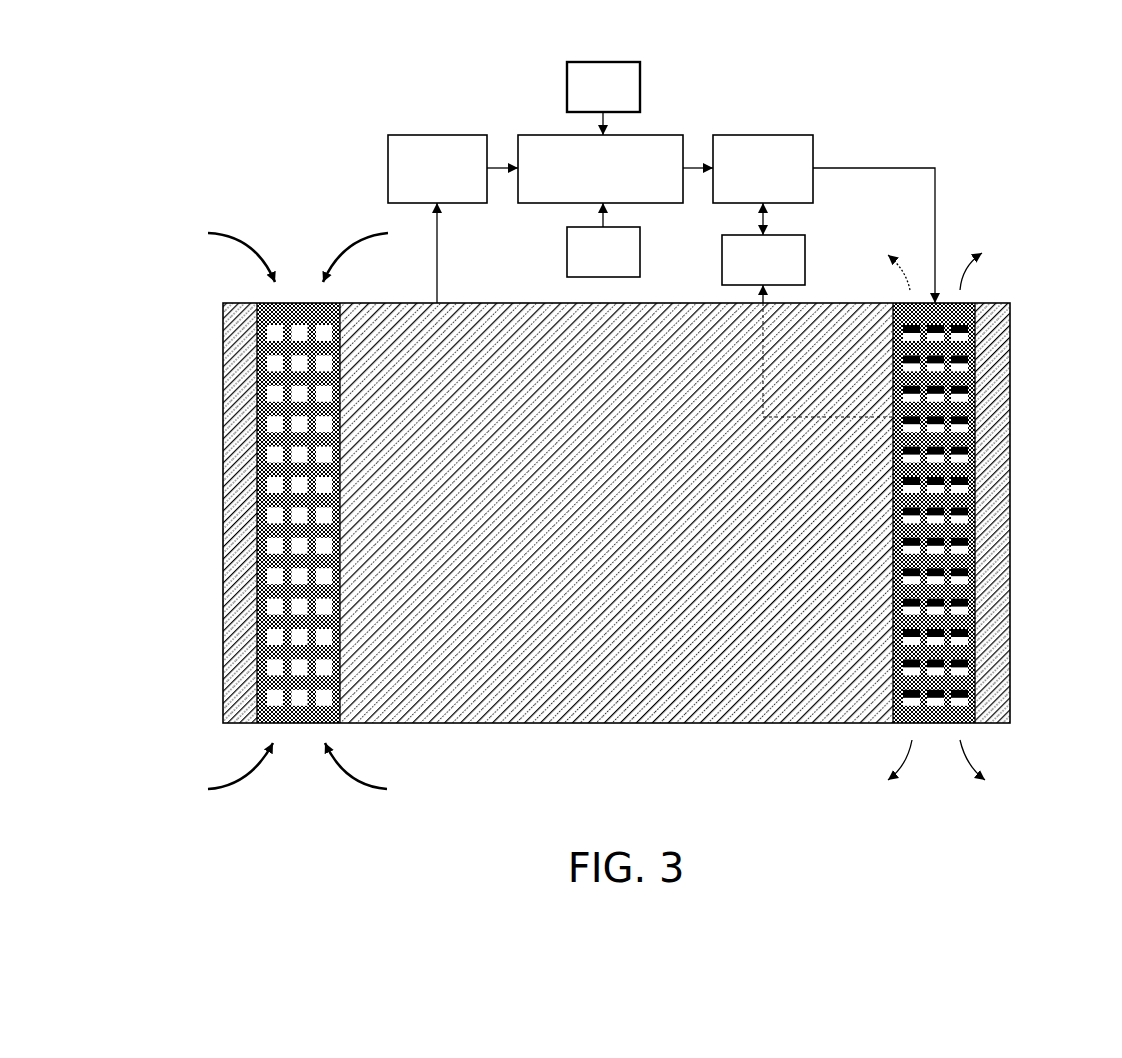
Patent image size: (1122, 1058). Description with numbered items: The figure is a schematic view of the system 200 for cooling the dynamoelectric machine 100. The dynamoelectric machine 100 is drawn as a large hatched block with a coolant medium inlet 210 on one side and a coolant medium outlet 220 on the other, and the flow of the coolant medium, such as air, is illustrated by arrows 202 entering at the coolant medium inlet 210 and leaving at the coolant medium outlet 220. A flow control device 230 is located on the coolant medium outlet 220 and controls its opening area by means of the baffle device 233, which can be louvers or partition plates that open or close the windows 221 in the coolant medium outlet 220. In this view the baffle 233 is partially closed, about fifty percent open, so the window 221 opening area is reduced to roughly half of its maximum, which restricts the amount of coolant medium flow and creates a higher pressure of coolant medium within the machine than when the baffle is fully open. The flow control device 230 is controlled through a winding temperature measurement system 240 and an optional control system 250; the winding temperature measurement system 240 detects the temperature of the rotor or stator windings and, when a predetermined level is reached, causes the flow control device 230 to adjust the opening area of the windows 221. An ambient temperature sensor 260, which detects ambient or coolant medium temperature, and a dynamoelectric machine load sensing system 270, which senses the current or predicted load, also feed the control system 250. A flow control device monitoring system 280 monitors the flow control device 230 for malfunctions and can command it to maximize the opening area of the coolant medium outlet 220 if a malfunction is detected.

The dynamoelectric machine 100 is at (636, 724).
The system for cooling the dynamoelectric machine 200 is at (270, 90).
The arrows 202 is at (258, 238).
The coolant medium inlet 210 is at (240, 488).
The coolant medium outlet 220 is at (1010, 520).
The windows 221 is at (1010, 383).
The baffle device 233 is at (968, 660).
The flow control device 230 is at (743, 180).
The winding temperature measurement system 240 is at (417, 180).
The control system 250 is at (580, 180).
The ambient temperature sensor 260 is at (583, 100).
The dynamoelectric machine load sensing system 270 is at (583, 265).
The flow control device monitoring system 280 is at (743, 273).